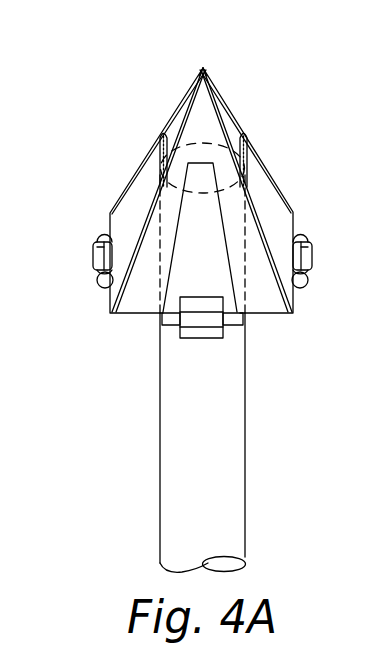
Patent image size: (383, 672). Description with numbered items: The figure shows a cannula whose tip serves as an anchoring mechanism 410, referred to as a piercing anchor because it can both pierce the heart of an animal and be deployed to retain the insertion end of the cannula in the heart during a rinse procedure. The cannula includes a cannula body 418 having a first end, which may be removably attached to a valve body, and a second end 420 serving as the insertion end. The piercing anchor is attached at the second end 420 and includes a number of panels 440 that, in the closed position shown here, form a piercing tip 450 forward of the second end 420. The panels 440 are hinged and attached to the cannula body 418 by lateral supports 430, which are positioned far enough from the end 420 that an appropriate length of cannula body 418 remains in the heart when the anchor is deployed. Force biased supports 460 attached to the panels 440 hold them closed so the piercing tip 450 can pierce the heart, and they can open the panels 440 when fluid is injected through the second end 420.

The anchoring mechanism 410 is at (129, 146).
The cannula body 418 is at (160, 438).
The second end 420 is at (214, 129).
The lateral supports 430 is at (93, 265).
The panels 440 is at (202, 100).
The piercing tip 450 is at (210, 53).
The force biased supports 460 is at (202, 217).